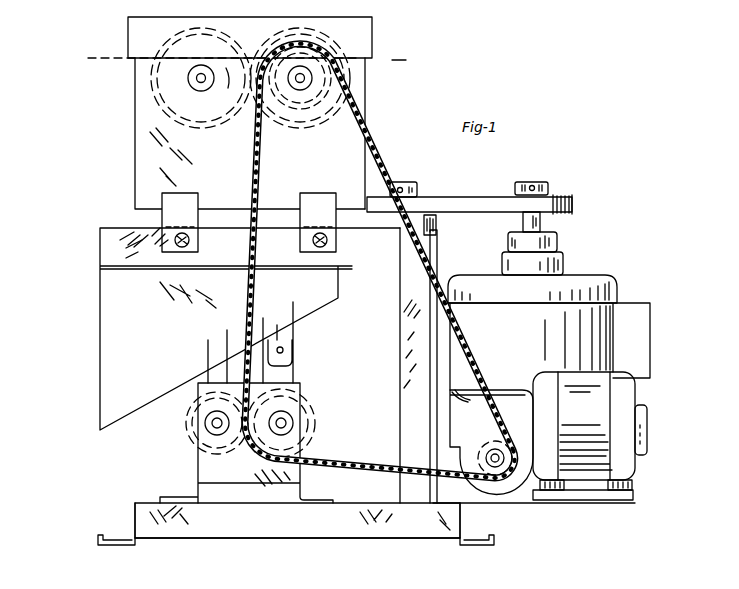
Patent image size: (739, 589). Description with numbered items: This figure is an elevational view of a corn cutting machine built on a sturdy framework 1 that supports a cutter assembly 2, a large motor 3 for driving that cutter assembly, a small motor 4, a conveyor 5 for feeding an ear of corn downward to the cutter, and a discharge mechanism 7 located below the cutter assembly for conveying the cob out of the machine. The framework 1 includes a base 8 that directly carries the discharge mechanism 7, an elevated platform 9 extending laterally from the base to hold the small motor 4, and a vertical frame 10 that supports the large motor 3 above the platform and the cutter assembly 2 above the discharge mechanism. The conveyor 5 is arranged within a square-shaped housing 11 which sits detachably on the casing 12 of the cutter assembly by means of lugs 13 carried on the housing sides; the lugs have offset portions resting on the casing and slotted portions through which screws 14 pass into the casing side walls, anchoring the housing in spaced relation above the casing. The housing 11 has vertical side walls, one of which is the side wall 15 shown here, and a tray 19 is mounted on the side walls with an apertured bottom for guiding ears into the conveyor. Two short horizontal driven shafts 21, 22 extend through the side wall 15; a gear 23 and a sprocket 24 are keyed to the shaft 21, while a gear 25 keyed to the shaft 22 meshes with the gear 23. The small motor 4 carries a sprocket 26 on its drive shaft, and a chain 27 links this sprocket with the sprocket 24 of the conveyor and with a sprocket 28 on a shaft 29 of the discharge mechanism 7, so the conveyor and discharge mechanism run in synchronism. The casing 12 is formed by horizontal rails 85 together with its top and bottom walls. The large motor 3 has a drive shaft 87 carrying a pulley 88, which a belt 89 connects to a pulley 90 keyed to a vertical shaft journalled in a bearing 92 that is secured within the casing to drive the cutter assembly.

The framework 1 is at (139, 471).
The cutter assembly 2 is at (84, 48).
The large motor 3 is at (598, 288).
The small motor 4 is at (634, 404).
The conveyor 5 is at (121, 28).
The discharge mechanism 7 is at (176, 429).
The base 8 is at (130, 513).
The elevated platform 9 is at (583, 503).
The vertical frame 10 is at (412, 302).
The housing 11 is at (127, 169).
The casing 12 is at (100, 242).
The lugs 13 is at (188, 203).
The screws 14 is at (188, 248).
The side wall 15 is at (142, 140).
The tray 19 is at (372, 40).
The shaft 21 is at (302, 82).
The shaft 22 is at (204, 82).
The gear 23 is at (318, 128).
The sprocket 24 is at (284, 114).
The gear 25 is at (220, 124).
The sprocket 26 is at (490, 451).
The chain 27 is at (372, 152).
The sprocket 28 is at (316, 428).
The shaft 29 is at (287, 422).
The horizontal rails 85 is at (118, 252).
The drive shaft 87 is at (542, 223).
The pulley 88 is at (560, 197).
The belt 89 is at (463, 200).
The pulley 90 is at (422, 198).
The bearing 92 is at (438, 224).